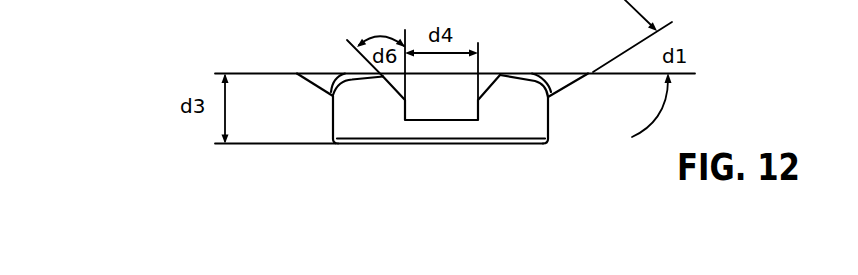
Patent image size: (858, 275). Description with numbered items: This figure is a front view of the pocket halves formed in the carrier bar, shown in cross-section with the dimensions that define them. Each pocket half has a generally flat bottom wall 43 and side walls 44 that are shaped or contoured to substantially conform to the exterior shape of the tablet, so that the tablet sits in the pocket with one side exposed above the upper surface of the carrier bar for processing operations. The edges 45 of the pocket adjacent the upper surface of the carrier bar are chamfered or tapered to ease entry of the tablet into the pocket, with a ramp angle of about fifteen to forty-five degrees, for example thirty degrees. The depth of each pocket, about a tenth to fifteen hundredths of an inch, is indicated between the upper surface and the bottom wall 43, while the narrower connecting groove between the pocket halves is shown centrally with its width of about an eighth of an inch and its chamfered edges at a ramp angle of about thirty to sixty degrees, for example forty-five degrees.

The bottom wall 43 is at (391, 138).
The side walls 44 is at (333, 108).
The edges 45 is at (310, 82).